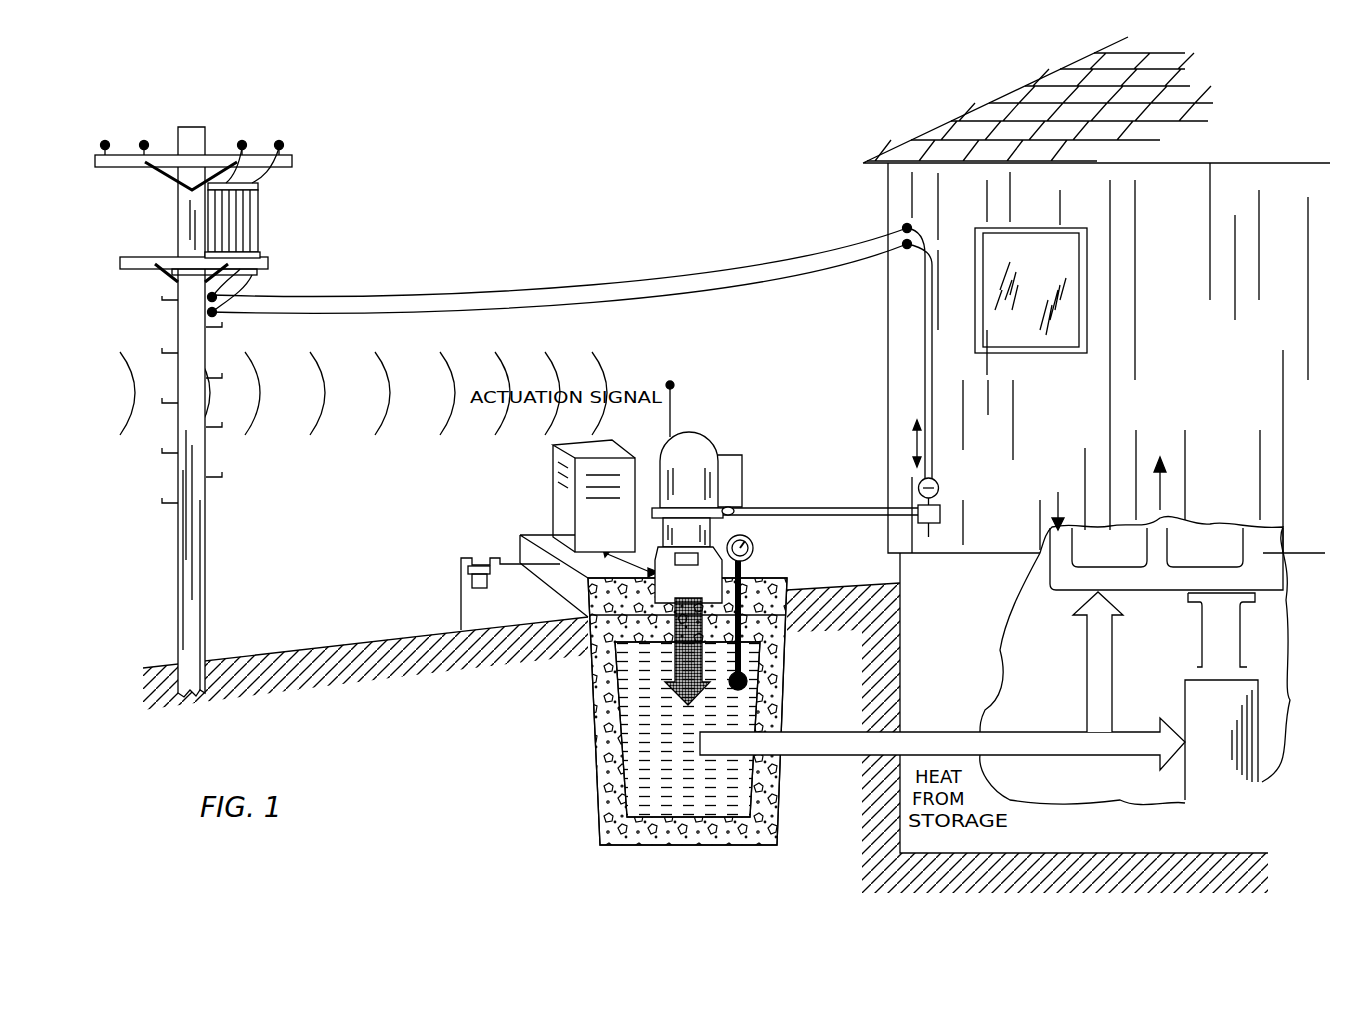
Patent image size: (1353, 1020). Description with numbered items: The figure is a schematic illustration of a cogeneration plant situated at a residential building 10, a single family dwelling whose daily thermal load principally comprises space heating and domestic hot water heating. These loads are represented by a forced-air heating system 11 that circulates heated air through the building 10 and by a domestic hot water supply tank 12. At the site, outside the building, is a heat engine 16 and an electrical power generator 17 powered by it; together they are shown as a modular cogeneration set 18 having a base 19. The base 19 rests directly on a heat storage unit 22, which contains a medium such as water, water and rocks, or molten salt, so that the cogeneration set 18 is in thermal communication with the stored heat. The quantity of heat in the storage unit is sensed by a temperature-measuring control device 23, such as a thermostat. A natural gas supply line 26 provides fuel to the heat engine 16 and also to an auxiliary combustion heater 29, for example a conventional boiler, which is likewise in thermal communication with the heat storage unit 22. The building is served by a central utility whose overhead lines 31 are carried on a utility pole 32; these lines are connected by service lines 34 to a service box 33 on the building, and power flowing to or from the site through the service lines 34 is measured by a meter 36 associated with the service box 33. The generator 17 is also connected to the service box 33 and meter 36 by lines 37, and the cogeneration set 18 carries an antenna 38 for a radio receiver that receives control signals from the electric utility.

The residential building 10 is at (888, 395).
The forced-air heating system 11 is at (1066, 573).
The domestic hot water supply tank 12 is at (1198, 775).
The heat engine 16 is at (718, 478).
The electrical power generator 17 is at (745, 522).
The modular cogeneration set 18 is at (718, 450).
The base 19 is at (748, 565).
The heat storage unit 22 is at (592, 716).
The temperature-measuring control device 23 is at (755, 548).
The natural gas supply line 26 is at (460, 598).
The auxiliary combustion heater 29 is at (553, 453).
The overhead lines 31 is at (279, 146).
The utility pole 32 is at (200, 523).
The service box 33 is at (940, 512).
The service lines 34 is at (815, 254).
The meter 36 is at (935, 480).
The lines 37 is at (832, 506).
The antenna 38 is at (675, 405).